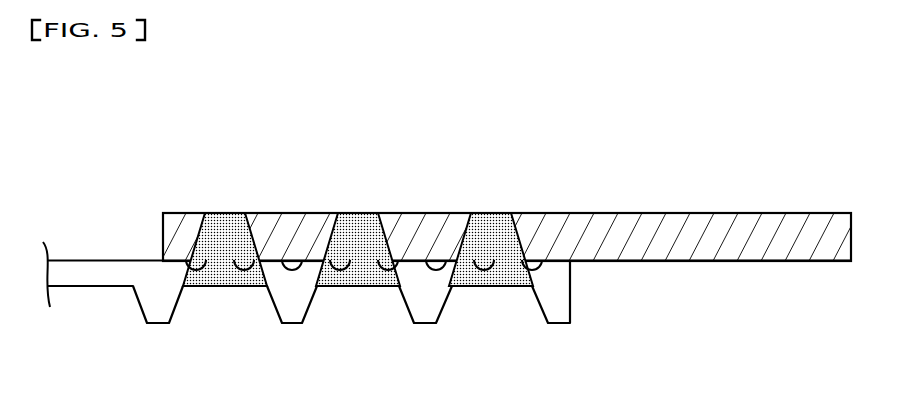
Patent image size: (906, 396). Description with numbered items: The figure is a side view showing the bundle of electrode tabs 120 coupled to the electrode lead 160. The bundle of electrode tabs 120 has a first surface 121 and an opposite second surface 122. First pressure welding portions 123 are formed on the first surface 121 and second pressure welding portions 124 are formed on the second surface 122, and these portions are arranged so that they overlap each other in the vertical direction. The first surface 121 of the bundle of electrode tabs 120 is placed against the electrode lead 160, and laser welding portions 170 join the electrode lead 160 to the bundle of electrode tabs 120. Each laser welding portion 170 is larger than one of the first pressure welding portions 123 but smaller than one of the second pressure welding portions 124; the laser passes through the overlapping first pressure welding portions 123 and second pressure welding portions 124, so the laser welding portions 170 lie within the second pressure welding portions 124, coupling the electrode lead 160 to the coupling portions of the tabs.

The bundle of electrode tabs 120 is at (68, 292).
The first surface 121 is at (103, 258).
The second surface 122 is at (109, 288).
The first pressure welding portions 123 is at (193, 258).
The second pressure welding portions 124 is at (223, 288).
The electrode lead 160 is at (617, 227).
The laser welding portions 170 is at (227, 213).